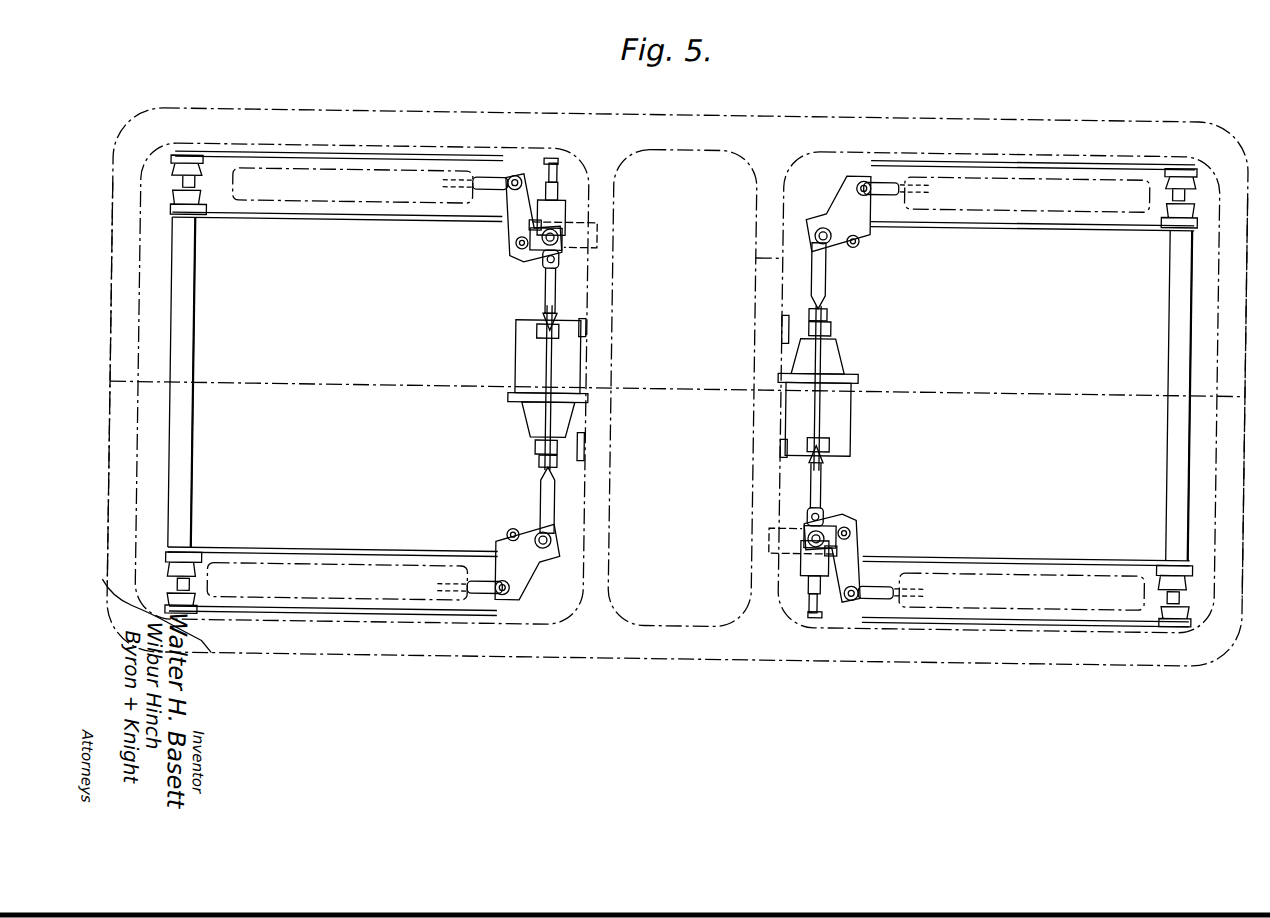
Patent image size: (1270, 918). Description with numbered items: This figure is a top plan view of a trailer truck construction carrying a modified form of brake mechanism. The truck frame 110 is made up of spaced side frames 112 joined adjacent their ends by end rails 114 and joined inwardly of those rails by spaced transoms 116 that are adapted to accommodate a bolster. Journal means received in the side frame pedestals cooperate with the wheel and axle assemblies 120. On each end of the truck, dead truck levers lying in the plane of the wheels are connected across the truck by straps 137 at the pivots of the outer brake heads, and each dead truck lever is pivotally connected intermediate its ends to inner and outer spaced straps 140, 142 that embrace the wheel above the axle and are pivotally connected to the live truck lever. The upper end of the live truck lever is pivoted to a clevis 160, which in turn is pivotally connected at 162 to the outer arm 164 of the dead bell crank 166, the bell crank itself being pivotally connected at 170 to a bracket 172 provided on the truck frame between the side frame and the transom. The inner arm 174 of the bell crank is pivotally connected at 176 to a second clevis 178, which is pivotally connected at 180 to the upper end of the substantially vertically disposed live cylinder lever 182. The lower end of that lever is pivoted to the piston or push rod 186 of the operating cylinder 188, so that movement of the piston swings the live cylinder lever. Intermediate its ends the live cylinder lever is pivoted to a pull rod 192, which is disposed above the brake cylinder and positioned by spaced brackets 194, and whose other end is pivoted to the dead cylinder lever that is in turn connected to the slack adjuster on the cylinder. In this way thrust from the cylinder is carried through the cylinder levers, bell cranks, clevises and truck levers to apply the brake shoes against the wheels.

The truck frame 110 is at (586, 131).
The side frames 112 is at (341, 130).
The end rails 114 is at (121, 333).
The transoms 116 is at (599, 321).
The wheel and axle assemblies 120 is at (376, 196).
The straps 137 is at (185, 359).
The inner strap 140 is at (275, 224).
The outer strap 142 is at (262, 158).
The clevis 160 is at (493, 594).
The pivot 162 is at (535, 230).
The outer arm 164 is at (508, 210).
The dead bell crank 166 is at (512, 214).
The pivot 170 is at (518, 250).
The bracket 172 is at (508, 260).
The inner arm 174 is at (523, 250).
The pivot 176 is at (553, 240).
The clevis 178 is at (551, 261).
The pivot 180 is at (550, 287).
The live cylinder lever 182 is at (538, 488).
The piston or push rod 186 is at (540, 473).
The operating cylinder 188 is at (527, 360).
The pull rod 192 is at (544, 370).
The brackets 194 is at (554, 332).